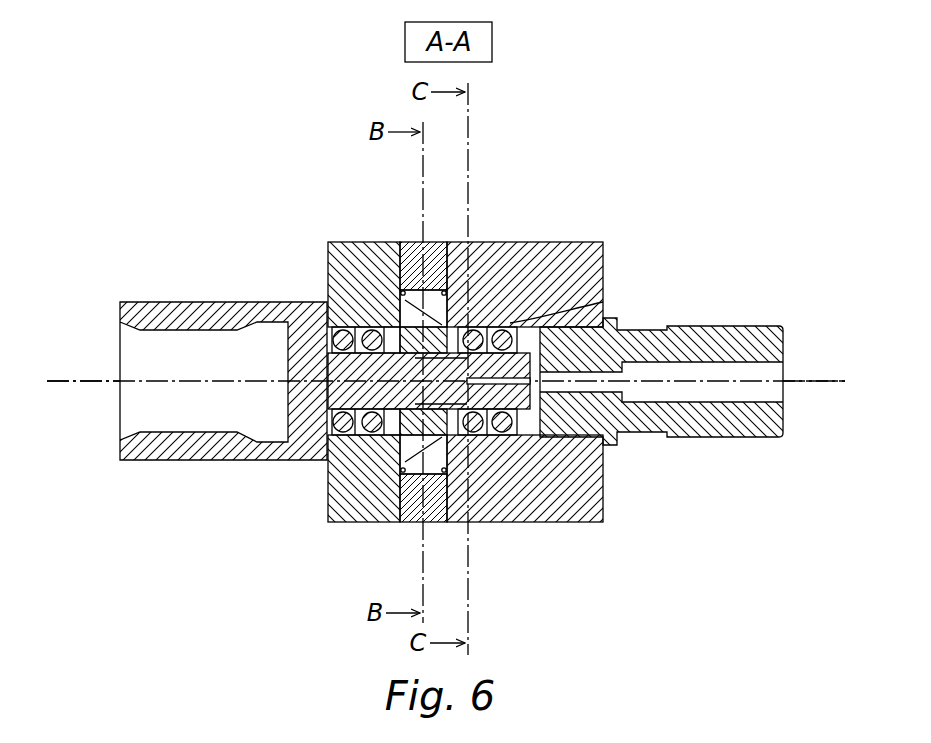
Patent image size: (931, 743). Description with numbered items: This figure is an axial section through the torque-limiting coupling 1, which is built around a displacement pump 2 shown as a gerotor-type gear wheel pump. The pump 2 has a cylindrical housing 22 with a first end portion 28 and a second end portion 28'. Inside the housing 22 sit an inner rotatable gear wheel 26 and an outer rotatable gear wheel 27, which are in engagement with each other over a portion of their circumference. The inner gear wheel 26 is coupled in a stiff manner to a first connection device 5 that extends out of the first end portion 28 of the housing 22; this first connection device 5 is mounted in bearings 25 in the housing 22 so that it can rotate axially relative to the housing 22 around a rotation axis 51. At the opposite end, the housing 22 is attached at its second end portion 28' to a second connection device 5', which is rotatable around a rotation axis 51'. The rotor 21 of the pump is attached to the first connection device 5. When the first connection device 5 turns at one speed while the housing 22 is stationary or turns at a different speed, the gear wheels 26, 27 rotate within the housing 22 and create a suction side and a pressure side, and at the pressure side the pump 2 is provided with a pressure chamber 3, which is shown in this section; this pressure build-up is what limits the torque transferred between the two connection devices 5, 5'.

The torque-limiting coupling 1 is at (250, 172).
The pump 2 is at (582, 217).
The pressure chamber 3 is at (395, 412).
The first connection device 5 is at (223, 342).
The second connection device 5' is at (661, 346).
The rotor 21 is at (527, 393).
The housing 22 is at (553, 510).
The bearings 25 is at (347, 434).
The inner rotatable gear wheel 26 is at (378, 438).
The outer rotatable gear wheel 27 is at (400, 296).
The first end portion 28 is at (318, 363).
The second end portion 28' is at (573, 262).
The rotation axis 51 is at (83, 336).
The rotation axis 51' is at (816, 335).